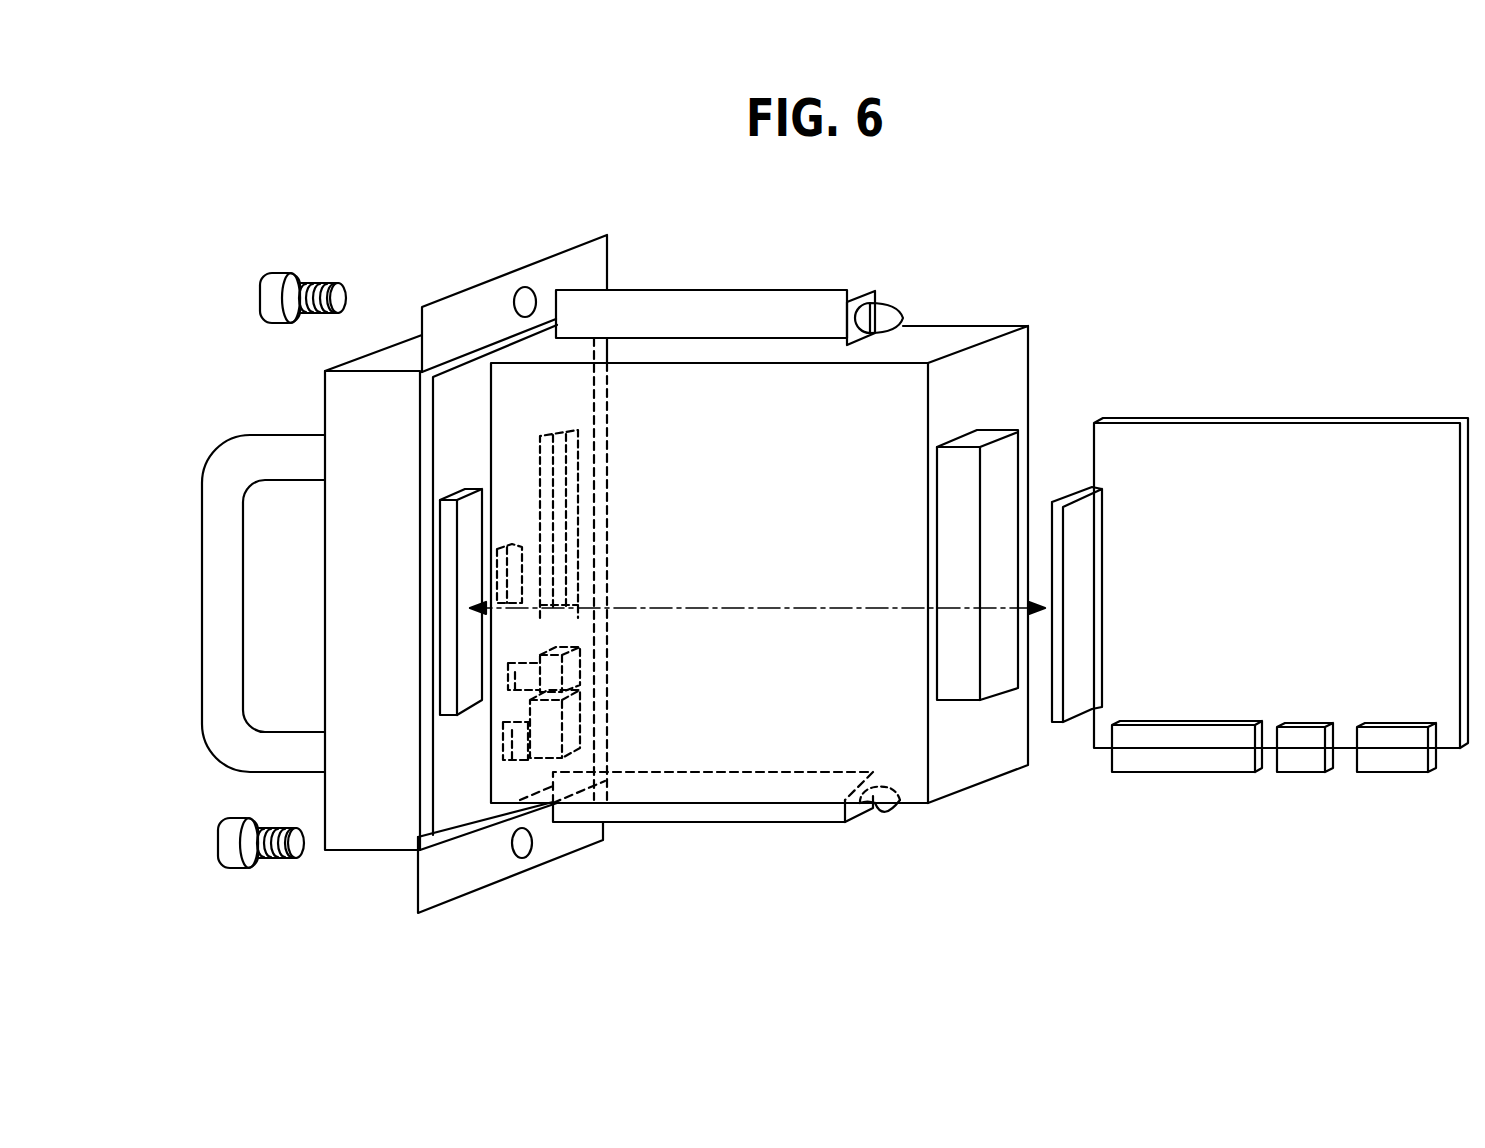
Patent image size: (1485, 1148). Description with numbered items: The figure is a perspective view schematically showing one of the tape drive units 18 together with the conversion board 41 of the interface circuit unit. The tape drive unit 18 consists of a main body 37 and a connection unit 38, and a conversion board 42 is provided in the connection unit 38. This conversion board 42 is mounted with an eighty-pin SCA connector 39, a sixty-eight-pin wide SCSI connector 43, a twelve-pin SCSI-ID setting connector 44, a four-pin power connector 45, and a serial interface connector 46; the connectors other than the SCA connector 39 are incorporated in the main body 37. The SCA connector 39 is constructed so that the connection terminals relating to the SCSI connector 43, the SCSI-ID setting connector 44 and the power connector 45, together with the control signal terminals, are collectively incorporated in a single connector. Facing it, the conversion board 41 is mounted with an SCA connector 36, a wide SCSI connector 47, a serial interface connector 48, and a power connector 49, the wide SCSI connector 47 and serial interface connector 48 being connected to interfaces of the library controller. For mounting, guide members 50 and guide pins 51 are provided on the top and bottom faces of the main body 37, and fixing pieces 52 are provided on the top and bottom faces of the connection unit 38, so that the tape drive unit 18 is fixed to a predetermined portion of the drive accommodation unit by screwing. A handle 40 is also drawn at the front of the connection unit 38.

The tape drive unit 18 is at (996, 252).
The SCA connector 36 is at (1092, 617).
The main body 37 is at (962, 765).
The connection unit 38 is at (355, 425).
The SCA connector 39 is at (465, 653).
The handle 40 is at (208, 540).
The conversion board 41 is at (1266, 392).
The conversion board 42 is at (452, 800).
The wide SCSI connector 43 is at (555, 556).
The SCSI-ID setting connector 44 is at (580, 672).
The power connector 45 is at (575, 741).
The serial interface connector 46 is at (527, 542).
The wide SCSI connector 47 is at (1195, 755).
The serial interface connector 48 is at (1308, 760).
The power connector 49 is at (1393, 760).
The guide member 50 is at (768, 310).
The guide pin 51 is at (903, 318).
The fixing piece 52 is at (470, 310).